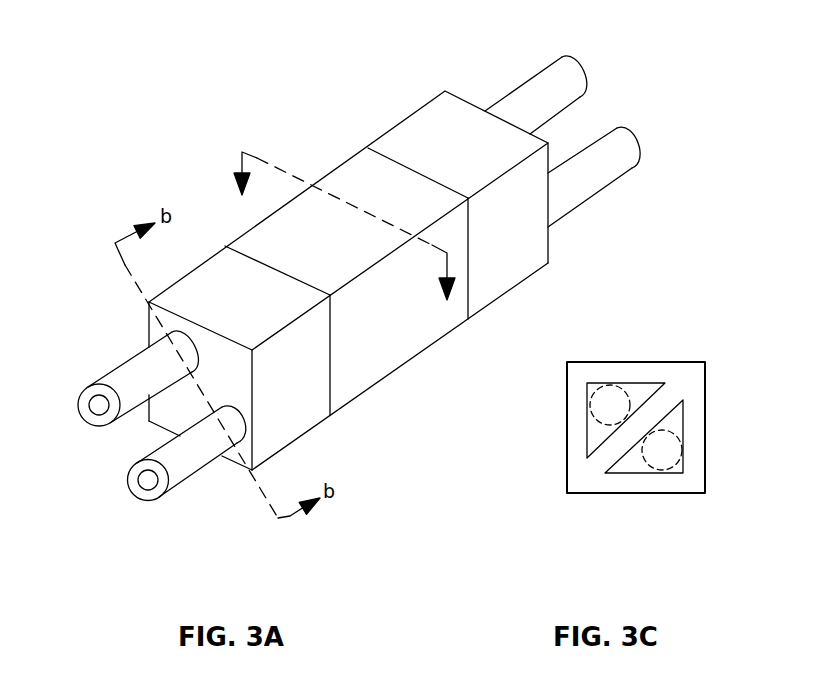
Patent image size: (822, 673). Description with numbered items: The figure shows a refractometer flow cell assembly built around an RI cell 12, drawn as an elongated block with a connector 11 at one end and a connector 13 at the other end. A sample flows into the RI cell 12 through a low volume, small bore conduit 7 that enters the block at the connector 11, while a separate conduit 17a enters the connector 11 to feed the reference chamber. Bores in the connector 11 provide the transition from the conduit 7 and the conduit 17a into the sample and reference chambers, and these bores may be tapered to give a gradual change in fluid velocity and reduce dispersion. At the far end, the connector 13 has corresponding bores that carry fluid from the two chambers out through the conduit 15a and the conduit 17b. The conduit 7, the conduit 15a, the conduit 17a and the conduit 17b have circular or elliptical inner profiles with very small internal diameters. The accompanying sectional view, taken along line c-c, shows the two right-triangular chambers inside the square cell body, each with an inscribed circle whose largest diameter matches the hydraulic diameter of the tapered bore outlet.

In FIG. 3A, the conduit 7 is at (122, 356).
In FIG. 3A, the connector 11 is at (308, 425).
In FIG. 3A, the RI cell 12 is at (376, 188).
In FIG. 3C, the RI cell 12 is at (660, 352).
In FIG. 3A, the connector 13 is at (412, 118).
In FIG. 3A, the fluid conduit 15a is at (574, 66).
In FIG. 3A, the conduit 17a is at (190, 486).
In FIG. 3A, the fluid conduit 17b is at (626, 141).